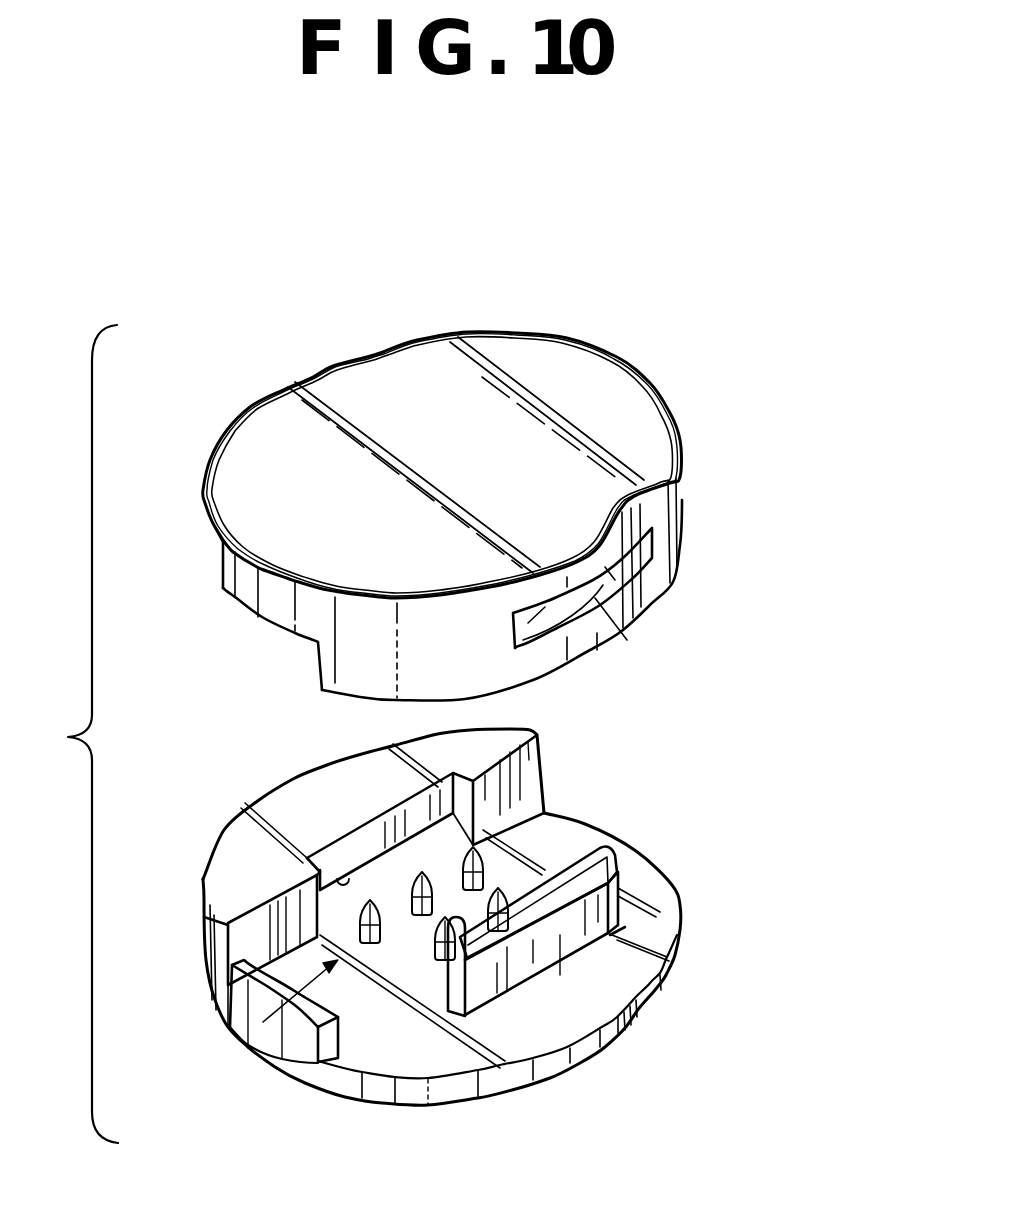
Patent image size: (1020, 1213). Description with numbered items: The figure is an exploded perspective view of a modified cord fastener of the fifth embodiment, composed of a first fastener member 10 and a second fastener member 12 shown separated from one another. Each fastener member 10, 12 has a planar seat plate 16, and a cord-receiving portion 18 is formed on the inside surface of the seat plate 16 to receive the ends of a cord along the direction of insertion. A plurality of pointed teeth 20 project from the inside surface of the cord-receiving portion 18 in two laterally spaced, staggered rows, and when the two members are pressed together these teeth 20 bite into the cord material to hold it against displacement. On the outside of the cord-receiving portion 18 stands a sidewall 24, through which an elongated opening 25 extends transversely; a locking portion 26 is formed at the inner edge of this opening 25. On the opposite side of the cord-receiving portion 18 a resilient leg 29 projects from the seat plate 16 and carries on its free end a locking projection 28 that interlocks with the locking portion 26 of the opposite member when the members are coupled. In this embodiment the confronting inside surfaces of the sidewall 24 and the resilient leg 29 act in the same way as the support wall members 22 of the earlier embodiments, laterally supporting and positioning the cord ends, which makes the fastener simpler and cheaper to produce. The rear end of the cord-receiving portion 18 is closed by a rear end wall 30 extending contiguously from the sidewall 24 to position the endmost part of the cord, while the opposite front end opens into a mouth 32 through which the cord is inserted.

The fastener member 10 is at (698, 971).
The fastener member 12 is at (571, 327).
The seat plate 16 is at (557, 1025).
The cord-receiving portion 18 is at (238, 1020).
The pointed teeth 20 is at (510, 857).
The support wall members 22 is at (248, 932).
The sidewall 24 is at (248, 893).
The opening 25 is at (578, 607).
The locking portion 26 is at (343, 876).
The locking projection 28 is at (612, 863).
The resilient leg 29 is at (603, 895).
The rear end wall 30 is at (305, 1042).
The mouth 32 is at (583, 838).